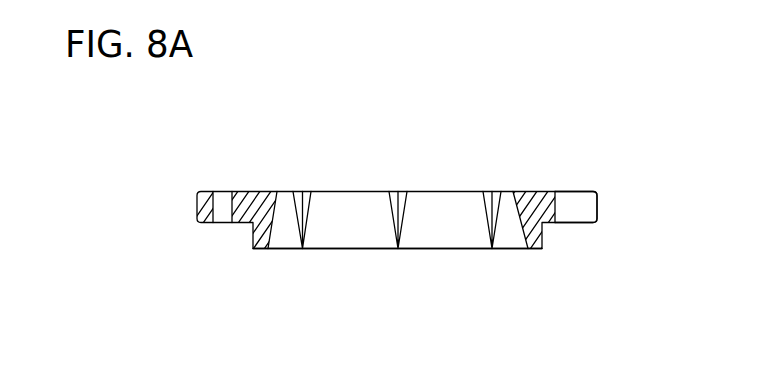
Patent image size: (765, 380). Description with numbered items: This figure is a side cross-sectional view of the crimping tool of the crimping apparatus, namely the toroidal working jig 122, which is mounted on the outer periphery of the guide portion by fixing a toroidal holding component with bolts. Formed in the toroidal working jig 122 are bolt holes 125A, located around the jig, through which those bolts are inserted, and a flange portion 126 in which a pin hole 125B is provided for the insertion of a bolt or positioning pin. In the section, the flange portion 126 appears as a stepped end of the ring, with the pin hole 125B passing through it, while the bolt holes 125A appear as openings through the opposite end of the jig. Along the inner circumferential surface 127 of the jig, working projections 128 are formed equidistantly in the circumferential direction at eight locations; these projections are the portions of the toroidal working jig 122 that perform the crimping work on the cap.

The toroidal working jig 122 is at (517, 150).
The bolt holes 125A is at (223, 223).
The pin hole 125B is at (570, 225).
The flange portion 126 is at (603, 208).
The inner circumferential surface 127 is at (352, 222).
The working projections 128 is at (402, 212).